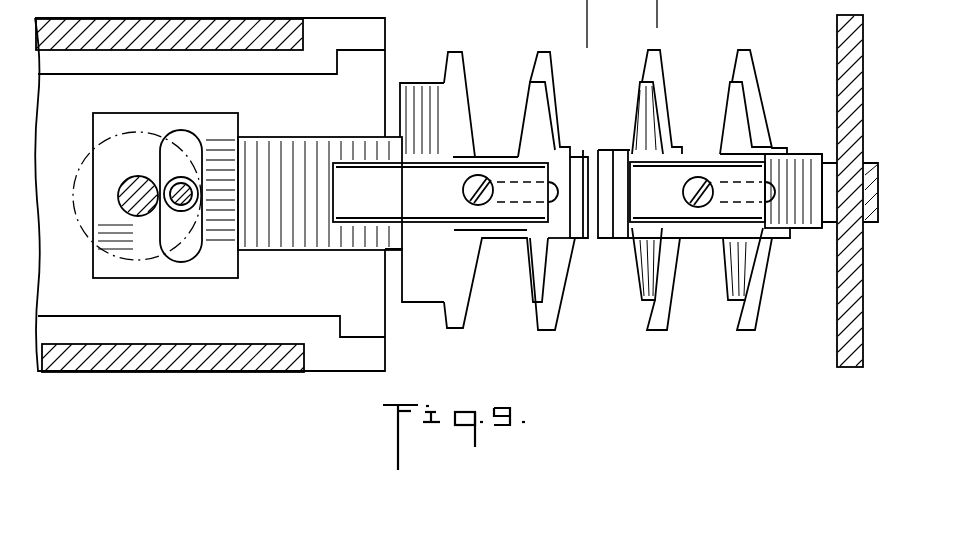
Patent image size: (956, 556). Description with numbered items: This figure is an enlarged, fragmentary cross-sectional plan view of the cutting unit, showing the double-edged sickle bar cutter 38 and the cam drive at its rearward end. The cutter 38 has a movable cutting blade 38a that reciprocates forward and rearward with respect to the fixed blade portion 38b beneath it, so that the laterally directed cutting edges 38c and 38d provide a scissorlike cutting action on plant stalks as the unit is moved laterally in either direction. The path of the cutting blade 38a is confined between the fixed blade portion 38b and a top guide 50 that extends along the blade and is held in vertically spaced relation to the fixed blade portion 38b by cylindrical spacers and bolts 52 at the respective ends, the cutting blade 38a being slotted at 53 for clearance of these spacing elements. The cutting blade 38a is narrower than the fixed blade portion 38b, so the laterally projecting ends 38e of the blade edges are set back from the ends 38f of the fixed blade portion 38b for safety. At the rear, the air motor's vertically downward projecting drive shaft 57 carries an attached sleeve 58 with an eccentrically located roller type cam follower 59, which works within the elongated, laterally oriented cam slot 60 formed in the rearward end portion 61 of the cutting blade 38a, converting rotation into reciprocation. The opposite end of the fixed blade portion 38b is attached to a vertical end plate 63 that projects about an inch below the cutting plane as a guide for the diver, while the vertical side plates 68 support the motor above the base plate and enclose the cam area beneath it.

The sickle bar cutter 38 is at (642, 303).
The movable cutting blade 38a is at (425, 292).
The fixed blade portion 38b is at (460, 313).
The cutting edge 38c is at (743, 83).
The cutting edge 38d is at (563, 55).
The laterally projecting ends of the blade edges 38e is at (643, 82).
The ends of the fixed blade portion 38f is at (743, 50).
The top guide 50 is at (412, 202).
The bolt 52 is at (473, 180).
The slot 53 is at (513, 210).
The drive shaft 57 is at (130, 180).
The sleeve 58 is at (80, 175).
The cam follower 59 is at (182, 178).
The cam slot 60 is at (200, 243).
The rearward end portion 61 is at (227, 123).
The vertical end plate 63 is at (860, 68).
The vertical side plates 68 is at (212, 368).